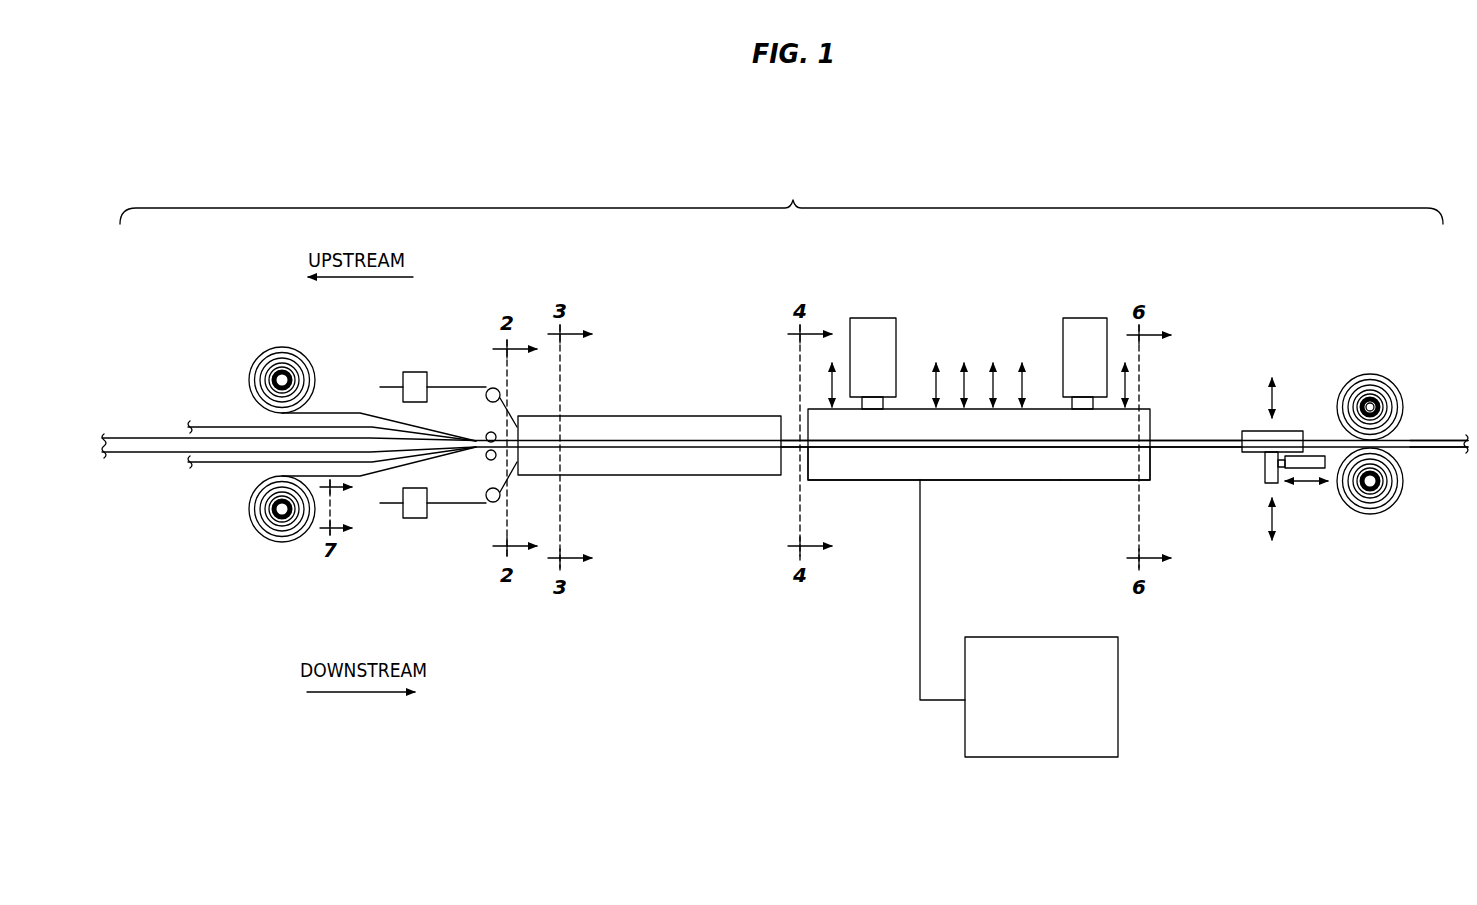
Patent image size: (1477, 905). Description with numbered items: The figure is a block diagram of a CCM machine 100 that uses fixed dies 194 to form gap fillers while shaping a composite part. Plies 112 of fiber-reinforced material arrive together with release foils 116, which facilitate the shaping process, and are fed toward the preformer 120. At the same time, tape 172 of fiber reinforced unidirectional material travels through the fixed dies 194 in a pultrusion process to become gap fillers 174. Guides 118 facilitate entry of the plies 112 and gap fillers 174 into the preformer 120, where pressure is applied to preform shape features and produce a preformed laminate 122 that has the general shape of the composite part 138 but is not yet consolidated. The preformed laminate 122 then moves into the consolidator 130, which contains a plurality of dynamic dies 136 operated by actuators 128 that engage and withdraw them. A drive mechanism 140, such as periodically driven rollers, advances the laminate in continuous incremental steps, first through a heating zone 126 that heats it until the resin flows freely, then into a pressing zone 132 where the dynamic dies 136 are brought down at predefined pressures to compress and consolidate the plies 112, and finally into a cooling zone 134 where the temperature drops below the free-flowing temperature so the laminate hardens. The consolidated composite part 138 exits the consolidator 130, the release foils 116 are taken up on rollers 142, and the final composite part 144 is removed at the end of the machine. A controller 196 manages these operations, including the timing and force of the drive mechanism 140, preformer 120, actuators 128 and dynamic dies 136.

The CCM machine 100 is at (781, 198).
The plies 112 is at (128, 437).
The release foils 116 is at (275, 347).
The guides 118 is at (486, 399).
The preformer 120 is at (645, 342).
The preformed laminate 122 is at (792, 439).
The heating zone 126 is at (872, 467).
The actuators 128 is at (875, 318).
The consolidator 130 is at (979, 391).
The pressing zone 132 is at (1000, 482).
The cooling zone 134 is at (1085, 483).
The dynamic dies 136 is at (1008, 420).
The composite part 138 is at (1207, 449).
The drive mechanism 140 is at (1252, 430).
The rollers 142 is at (1373, 397).
The final composite part 144 is at (1432, 439).
The tape 172 is at (390, 386).
The gap fillers 174 is at (458, 386).
The fixed dies 194 is at (415, 371).
The controller 196 is at (1019, 618).